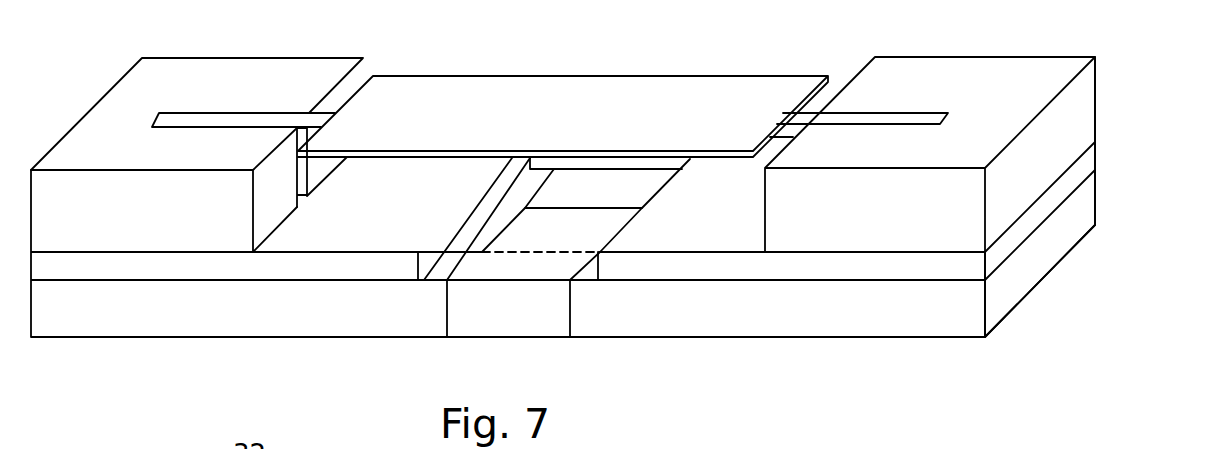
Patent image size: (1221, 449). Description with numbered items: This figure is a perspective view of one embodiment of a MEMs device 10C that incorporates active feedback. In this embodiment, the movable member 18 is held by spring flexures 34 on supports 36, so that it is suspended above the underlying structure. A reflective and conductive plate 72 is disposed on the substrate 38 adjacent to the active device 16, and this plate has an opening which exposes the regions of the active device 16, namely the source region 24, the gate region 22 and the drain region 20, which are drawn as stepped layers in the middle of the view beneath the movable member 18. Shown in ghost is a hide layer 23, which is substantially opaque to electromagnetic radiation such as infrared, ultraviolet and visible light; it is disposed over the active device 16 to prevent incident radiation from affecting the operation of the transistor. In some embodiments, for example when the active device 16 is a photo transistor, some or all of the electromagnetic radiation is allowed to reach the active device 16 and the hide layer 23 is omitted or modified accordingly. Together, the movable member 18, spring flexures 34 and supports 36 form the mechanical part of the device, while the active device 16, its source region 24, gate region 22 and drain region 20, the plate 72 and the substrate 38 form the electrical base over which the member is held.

The MEMs device 10C is at (1075, 286).
The active device 16 is at (578, 371).
The movable member 18 is at (583, 76).
The drain region 20 is at (545, 278).
The gate region 22 is at (573, 238).
The hide layer 23 is at (433, 280).
The source region 24 is at (612, 201).
The spring flexures 34 is at (273, 114).
The supports 36 is at (1098, 93).
The substrate 38 is at (1097, 193).
The reflective and conductive plate 72 is at (1098, 151).